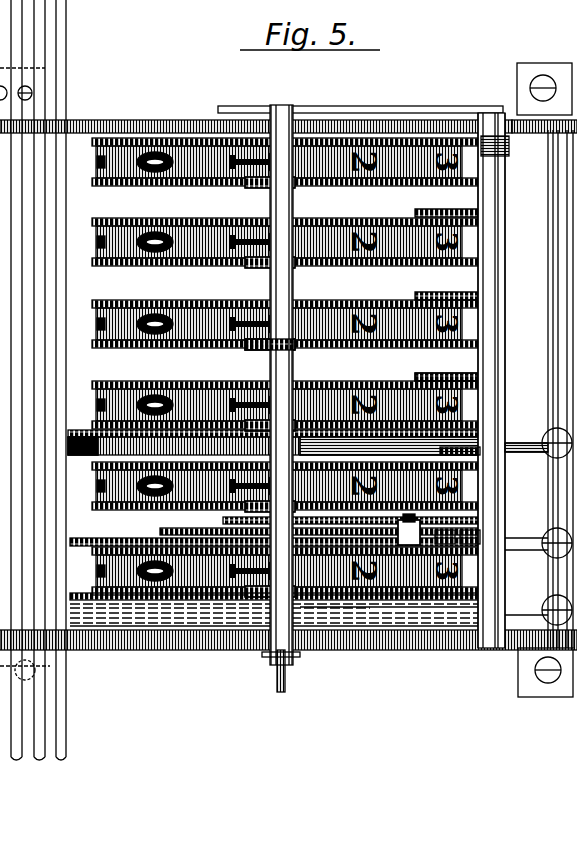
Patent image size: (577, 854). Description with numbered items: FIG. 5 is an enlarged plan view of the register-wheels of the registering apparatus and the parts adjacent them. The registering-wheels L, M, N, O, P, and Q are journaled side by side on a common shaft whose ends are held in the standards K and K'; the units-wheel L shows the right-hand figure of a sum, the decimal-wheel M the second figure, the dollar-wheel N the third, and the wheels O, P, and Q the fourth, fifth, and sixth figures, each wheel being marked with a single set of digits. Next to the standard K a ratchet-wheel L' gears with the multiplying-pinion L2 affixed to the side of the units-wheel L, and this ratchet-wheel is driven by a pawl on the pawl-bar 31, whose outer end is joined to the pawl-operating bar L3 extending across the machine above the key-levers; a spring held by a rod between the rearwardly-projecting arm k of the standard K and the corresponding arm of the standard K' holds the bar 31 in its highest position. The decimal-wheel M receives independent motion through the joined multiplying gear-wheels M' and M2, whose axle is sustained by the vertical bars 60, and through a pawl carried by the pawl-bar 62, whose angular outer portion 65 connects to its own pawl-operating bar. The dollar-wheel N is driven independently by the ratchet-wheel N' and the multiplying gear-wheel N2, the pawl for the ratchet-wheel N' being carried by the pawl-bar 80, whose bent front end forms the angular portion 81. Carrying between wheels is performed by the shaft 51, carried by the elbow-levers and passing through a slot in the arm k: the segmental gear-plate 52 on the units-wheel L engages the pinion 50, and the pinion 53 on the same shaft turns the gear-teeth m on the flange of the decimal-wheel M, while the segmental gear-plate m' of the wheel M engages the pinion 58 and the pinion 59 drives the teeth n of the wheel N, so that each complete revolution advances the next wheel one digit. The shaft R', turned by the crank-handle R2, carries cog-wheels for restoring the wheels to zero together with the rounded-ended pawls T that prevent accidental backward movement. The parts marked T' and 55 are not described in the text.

The standard K is at (288, 384).
The standard K' is at (360, 103).
The pawl-operating bar L3 is at (70, 710).
The registering-wheel Q is at (285, 163).
The registering-wheel P is at (285, 243).
The registering-wheel O is at (285, 325).
The dollar-wheel N is at (285, 406).
The decimal-wheel M is at (285, 487).
The units-wheel L is at (285, 623).
The ratchet-wheel N' is at (274, 429).
The angular portion 81 is at (83, 456).
The multiplying gear-wheel N2 is at (196, 520).
The multiplying gear-wheel M2 is at (301, 520).
The multiplying pinion M' is at (320, 547).
The outer portion of pawl-bar 65 is at (95, 540).
The collar T' is at (275, 605).
The pawl T is at (258, 357).
The ratchet-wheel L' is at (275, 640).
The multiplying-pinion L2 is at (262, 600).
The pawl bar 31 is at (173, 610).
The plate 55 is at (400, 610).
The rearwardly-projecting arm k is at (412, 650).
The shaft R' is at (255, 385).
The crank-handle R2 is at (286, 680).
The gear-teeth n is at (390, 405).
The shaft 51 is at (490, 398).
The pinion 59 is at (470, 432).
The segmental gear-plate m' is at (485, 433).
The pinion 58 is at (505, 448).
The pawl-bar 80 is at (524, 465).
The pinion 53 is at (478, 508).
The pawl bar 62 is at (518, 538).
The vertical bars 60 is at (322, 518).
The gear-teeth m is at (411, 524).
The segmental gear-plate 52 is at (442, 540).
The pinion 50 is at (470, 542).